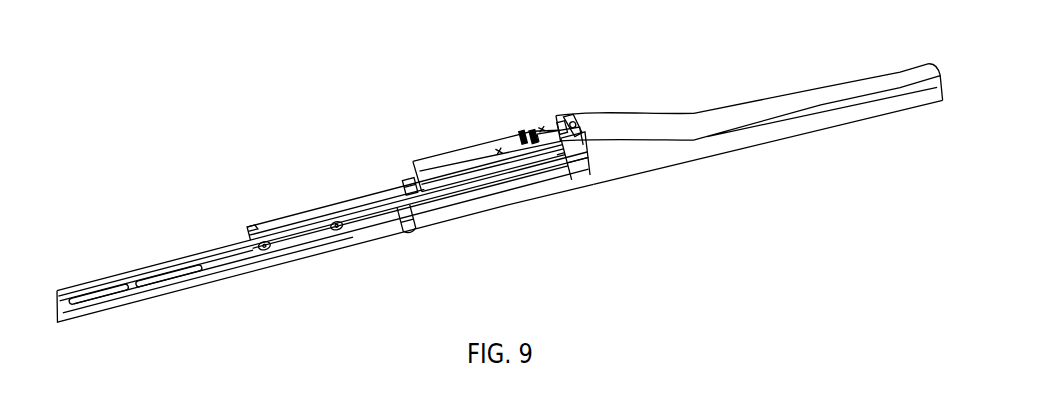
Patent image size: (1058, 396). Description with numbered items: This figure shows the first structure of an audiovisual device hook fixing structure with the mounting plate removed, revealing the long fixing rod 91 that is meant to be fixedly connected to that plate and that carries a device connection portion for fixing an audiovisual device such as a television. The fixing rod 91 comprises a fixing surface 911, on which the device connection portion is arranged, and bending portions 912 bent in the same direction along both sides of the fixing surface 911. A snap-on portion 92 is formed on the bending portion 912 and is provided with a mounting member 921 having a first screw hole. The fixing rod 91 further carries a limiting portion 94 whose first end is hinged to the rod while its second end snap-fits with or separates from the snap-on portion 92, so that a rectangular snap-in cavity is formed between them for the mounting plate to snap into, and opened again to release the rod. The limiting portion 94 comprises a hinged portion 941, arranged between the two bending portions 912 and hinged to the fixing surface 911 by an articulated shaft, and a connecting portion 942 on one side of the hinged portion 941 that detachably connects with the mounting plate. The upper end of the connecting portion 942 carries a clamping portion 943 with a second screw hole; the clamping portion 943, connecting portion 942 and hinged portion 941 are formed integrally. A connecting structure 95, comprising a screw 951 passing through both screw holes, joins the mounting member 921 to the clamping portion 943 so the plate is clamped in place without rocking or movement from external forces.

The fixing rod 91 is at (253, 226).
The fixing surface 911 is at (357, 203).
The bending portions 912 is at (300, 212).
The snap-on portion 92 is at (582, 128).
The mounting member 921 is at (563, 130).
The limiting portion 94 is at (447, 167).
The hinged portion 941 is at (414, 185).
The connecting portion 942 is at (400, 190).
The clamping portion 943 is at (473, 160).
The connecting structure 95 is at (527, 143).
The screw 951 is at (575, 127).